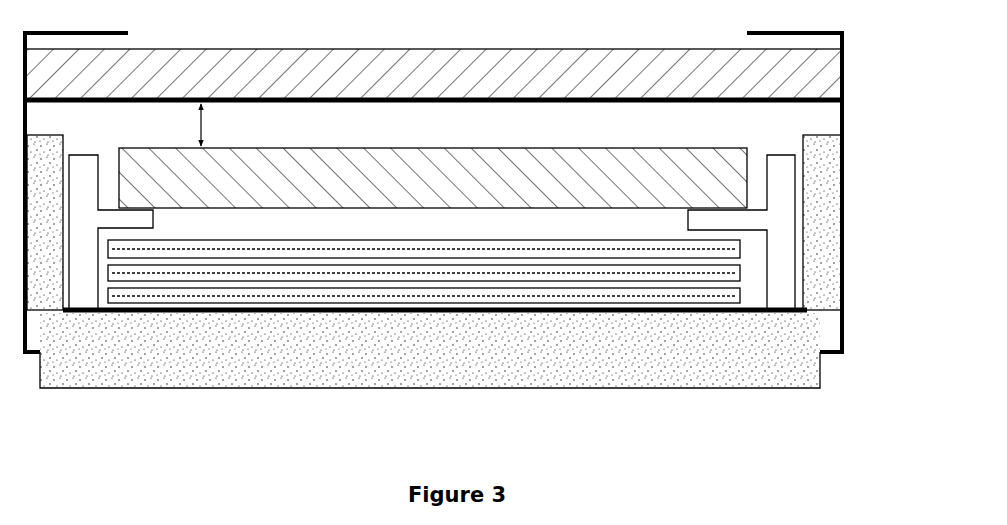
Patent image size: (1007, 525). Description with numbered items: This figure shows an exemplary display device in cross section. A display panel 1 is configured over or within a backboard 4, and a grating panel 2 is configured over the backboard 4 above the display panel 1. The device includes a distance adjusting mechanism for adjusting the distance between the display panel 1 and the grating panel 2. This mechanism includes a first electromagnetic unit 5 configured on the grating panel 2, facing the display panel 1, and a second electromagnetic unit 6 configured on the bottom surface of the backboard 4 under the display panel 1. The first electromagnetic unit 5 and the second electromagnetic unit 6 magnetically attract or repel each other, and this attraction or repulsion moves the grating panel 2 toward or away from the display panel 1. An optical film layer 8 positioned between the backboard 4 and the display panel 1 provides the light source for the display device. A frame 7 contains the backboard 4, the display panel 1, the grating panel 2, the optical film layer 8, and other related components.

The display panel 1 is at (357, 148).
The grating panel 2 is at (458, 49).
The backboard 4 is at (430, 388).
The first electromagnetic unit 5 is at (617, 102).
The second electromagnetic unit 6 is at (553, 313).
The frame 7 is at (842, 121).
The optical film layer 8 is at (740, 278).